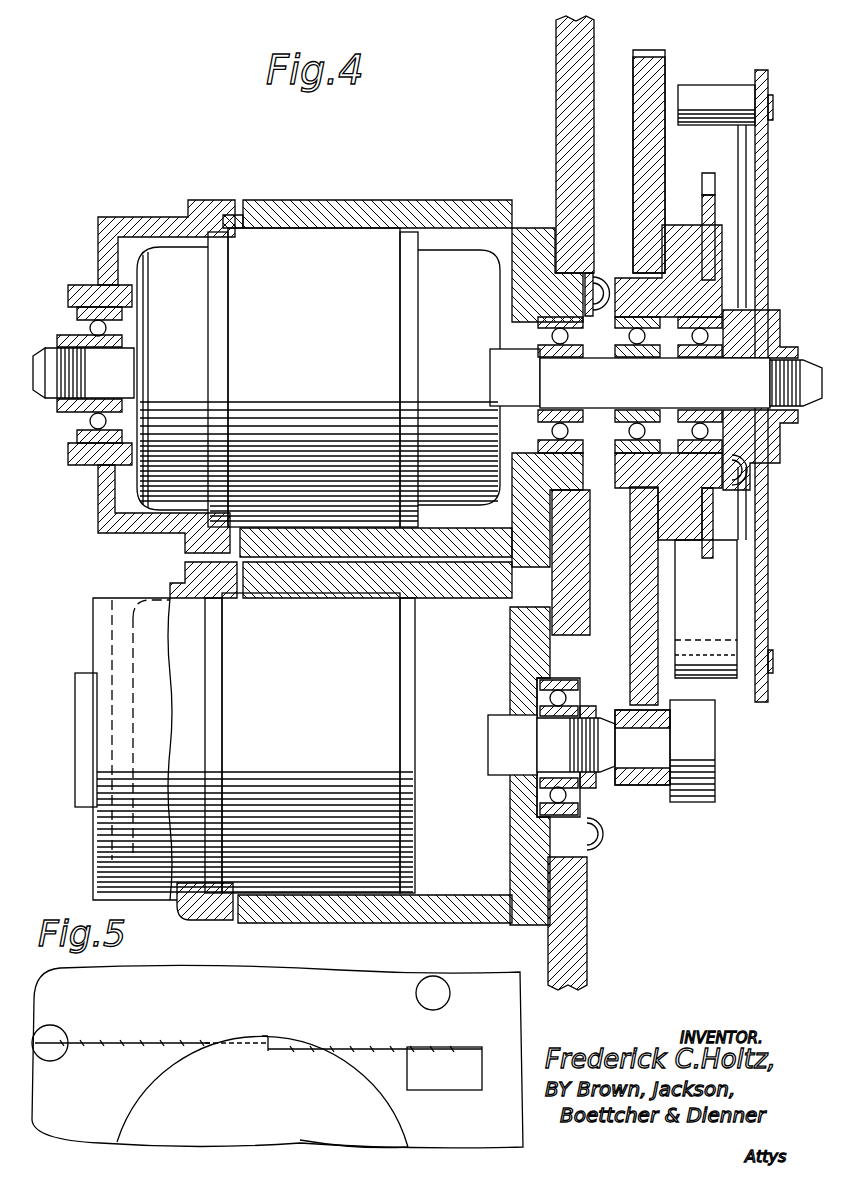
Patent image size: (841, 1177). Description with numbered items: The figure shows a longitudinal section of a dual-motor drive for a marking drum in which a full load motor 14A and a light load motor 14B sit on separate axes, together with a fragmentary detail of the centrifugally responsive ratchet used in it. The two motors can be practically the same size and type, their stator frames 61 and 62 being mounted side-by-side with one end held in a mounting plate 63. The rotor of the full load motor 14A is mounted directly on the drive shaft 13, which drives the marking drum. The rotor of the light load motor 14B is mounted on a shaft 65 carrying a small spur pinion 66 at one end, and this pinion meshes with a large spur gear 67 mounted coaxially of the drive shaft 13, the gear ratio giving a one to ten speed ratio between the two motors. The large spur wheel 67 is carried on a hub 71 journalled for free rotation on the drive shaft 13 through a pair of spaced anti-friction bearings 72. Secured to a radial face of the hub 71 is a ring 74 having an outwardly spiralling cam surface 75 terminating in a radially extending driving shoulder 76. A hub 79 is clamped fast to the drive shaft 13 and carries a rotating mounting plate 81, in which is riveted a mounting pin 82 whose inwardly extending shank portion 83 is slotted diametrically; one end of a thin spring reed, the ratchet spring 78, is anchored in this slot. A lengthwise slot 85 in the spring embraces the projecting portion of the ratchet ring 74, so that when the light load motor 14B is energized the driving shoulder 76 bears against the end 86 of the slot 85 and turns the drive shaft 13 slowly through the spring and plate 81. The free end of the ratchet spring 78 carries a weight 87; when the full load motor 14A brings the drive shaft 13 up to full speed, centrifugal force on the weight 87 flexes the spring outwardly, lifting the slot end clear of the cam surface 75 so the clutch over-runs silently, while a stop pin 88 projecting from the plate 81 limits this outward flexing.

In FIG. 4, the drive shaft 13 is at (681, 383).
In FIG. 4, the full load motor 14A is at (313, 275).
In FIG. 4, the light load motor 14B is at (327, 738).
In FIG. 4, the stator frame 61 is at (448, 210).
In FIG. 4, the stator frame 62 is at (510, 923).
In FIG. 4, the mounting plate 63 is at (560, 149).
In FIG. 4, the shaft 65 is at (551, 745).
In FIG. 4, the small spur pinion 66 is at (638, 777).
In FIG. 4, the large spur gear 67 is at (645, 80).
In FIG. 4, the hub 71 is at (680, 251).
In FIG. 4, the anti-friction bearings 72 is at (637, 344).
In FIG. 4, the ring 74 is at (713, 250).
In FIG. 5, the ring 74 is at (412, 1135).
In FIG. 5, the cam surface 75 is at (160, 1076).
In FIG. 5, the driving shoulder 76 is at (272, 1044).
In FIG. 4, the ratchet spring 78 is at (740, 153).
In FIG. 4, the hub 79 is at (782, 338).
In FIG. 4, the mounting plate 81 is at (766, 72).
In FIG. 4, the mounting pin 82 is at (774, 110).
In FIG. 4, the shank portion 83 is at (710, 97).
In FIG. 4, the slot 85 is at (712, 186).
In FIG. 5, the slot 85 is at (158, 1043).
In FIG. 5, the end of slot 86 is at (265, 1038).
In FIG. 5, the weight 87 is at (466, 1090).
In FIG. 5, the stop pin 88 is at (450, 1002).